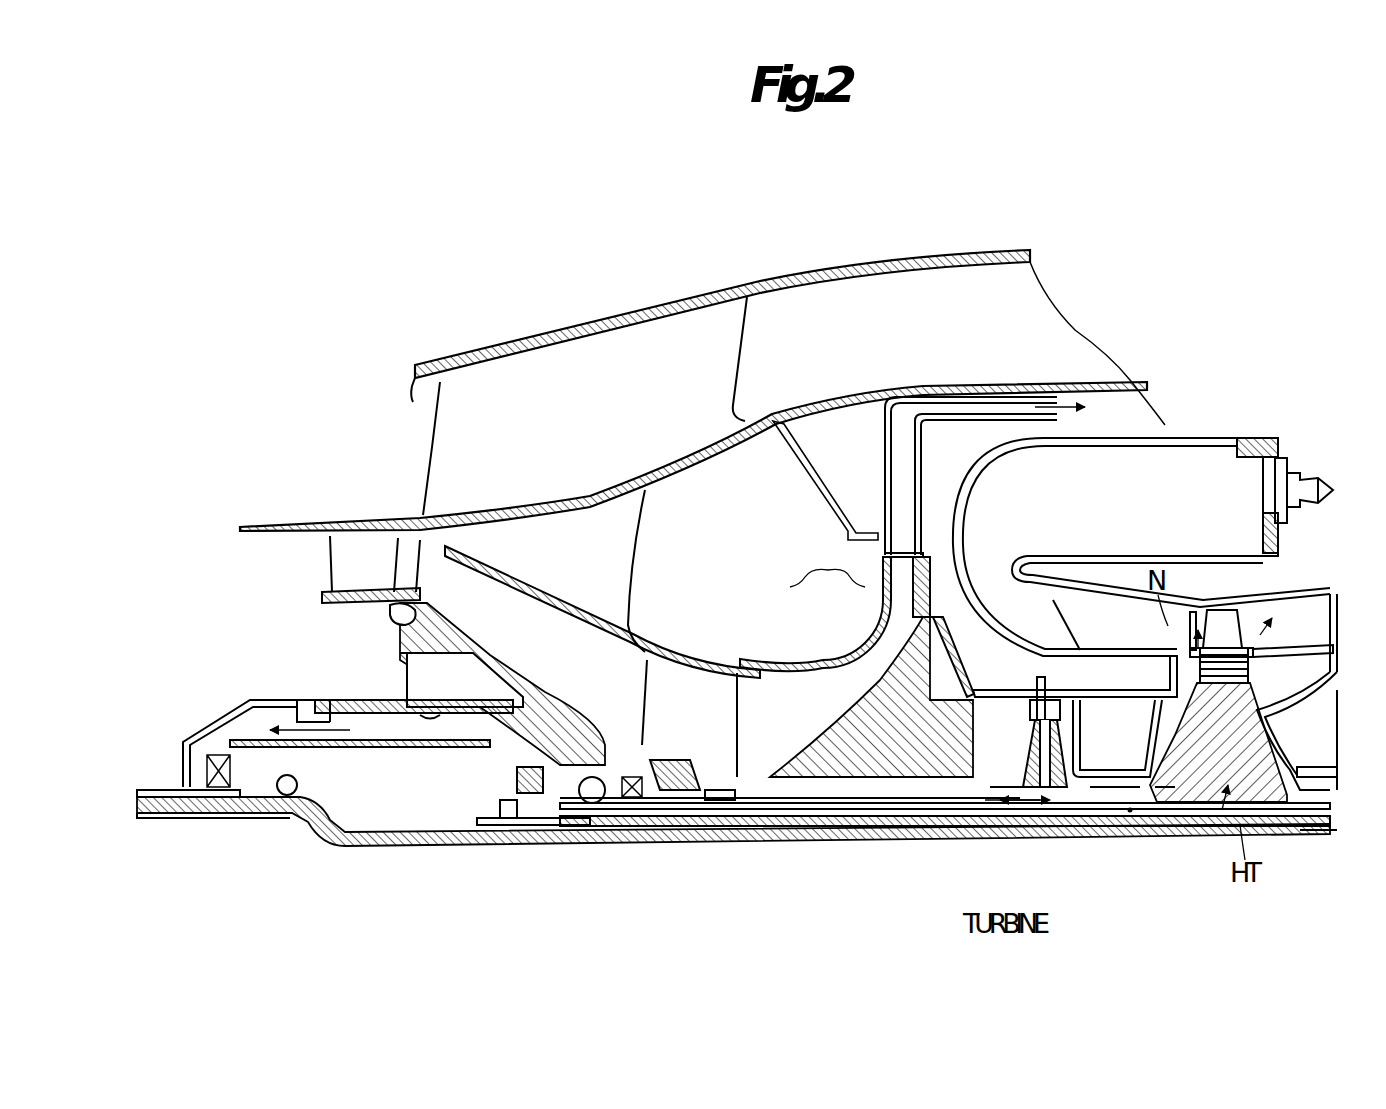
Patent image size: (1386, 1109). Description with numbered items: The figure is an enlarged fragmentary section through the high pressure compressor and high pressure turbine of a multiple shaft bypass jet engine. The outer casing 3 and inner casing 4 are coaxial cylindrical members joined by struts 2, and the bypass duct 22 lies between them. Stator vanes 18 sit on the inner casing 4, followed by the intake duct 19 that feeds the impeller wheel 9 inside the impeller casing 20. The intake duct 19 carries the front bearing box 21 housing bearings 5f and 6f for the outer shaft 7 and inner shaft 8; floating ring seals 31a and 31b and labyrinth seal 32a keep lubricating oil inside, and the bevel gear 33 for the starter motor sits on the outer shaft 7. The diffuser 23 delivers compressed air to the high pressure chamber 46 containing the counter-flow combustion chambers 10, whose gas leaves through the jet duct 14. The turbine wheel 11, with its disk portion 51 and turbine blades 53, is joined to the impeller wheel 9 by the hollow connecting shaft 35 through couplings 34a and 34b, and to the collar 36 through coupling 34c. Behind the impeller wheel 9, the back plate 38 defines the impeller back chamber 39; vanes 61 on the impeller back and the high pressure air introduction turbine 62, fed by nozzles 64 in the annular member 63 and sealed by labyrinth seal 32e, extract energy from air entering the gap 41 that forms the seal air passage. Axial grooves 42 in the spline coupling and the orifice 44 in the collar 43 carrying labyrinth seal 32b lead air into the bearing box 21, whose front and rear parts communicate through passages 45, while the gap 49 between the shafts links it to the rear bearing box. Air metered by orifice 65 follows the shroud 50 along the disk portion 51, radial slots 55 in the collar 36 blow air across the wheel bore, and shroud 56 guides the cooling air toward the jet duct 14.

The struts 2 is at (437, 460).
The outer casing 3 is at (1000, 256).
The inner casing 4 is at (1122, 385).
The front bearing 5f is at (592, 805).
The front bearing 6f is at (212, 758).
The outer shaft 7 is at (488, 818).
The inner shaft 8 is at (411, 832).
The impeller wheel 9 is at (830, 680).
The counter-flow combustion chambers 10 is at (1161, 523).
The high pressure turbine wheel 11 is at (1352, 557).
The jet duct 14 is at (1312, 647).
The stator vanes 18 is at (330, 570).
The intake duct 19 is at (552, 651).
The impeller casing 20 is at (857, 640).
The front bearing box 21 is at (303, 690).
The bypass duct 22 is at (920, 346).
The diffuser 23 is at (880, 470).
The floating ring seal 31a is at (212, 735).
The floating ring seal 31b is at (636, 800).
The labyrinth seal 32a is at (172, 800).
The labyrinth seal 32b is at (708, 828).
The labyrinth seal 32e is at (1100, 830).
The bevel gear 33 is at (517, 786).
The CURVIC coupling 34a is at (998, 815).
The CURVIC coupling 34b is at (1160, 815).
The CURVIC coupling 34c is at (1316, 830).
The hollow connecting shaft 35 is at (1097, 828).
The collar 36 is at (1325, 792).
The back plate 38 is at (952, 630).
The impeller back chamber 39 is at (1012, 770).
The gap 41 is at (1130, 812).
The axial grooves 42 is at (760, 810).
The collar 43 is at (705, 800).
The orifice 44 is at (684, 790).
The passages 45 is at (432, 715).
The high pressure chamber 46 is at (1138, 425).
The gap 49 is at (965, 896).
The shroud 50 is at (1185, 758).
The disk portion 51 is at (1331, 606).
The turbine blades 53 is at (1243, 618).
The radial slots 55 is at (1330, 790).
The shroud 56 is at (1268, 720).
The vanes 61 is at (975, 700).
The high pressure air introduction turbine 62 is at (1020, 715).
The circumferentially extending annular member 63 is at (1075, 722).
The nozzles 64 is at (1050, 692).
The orifice 65 is at (1137, 682).